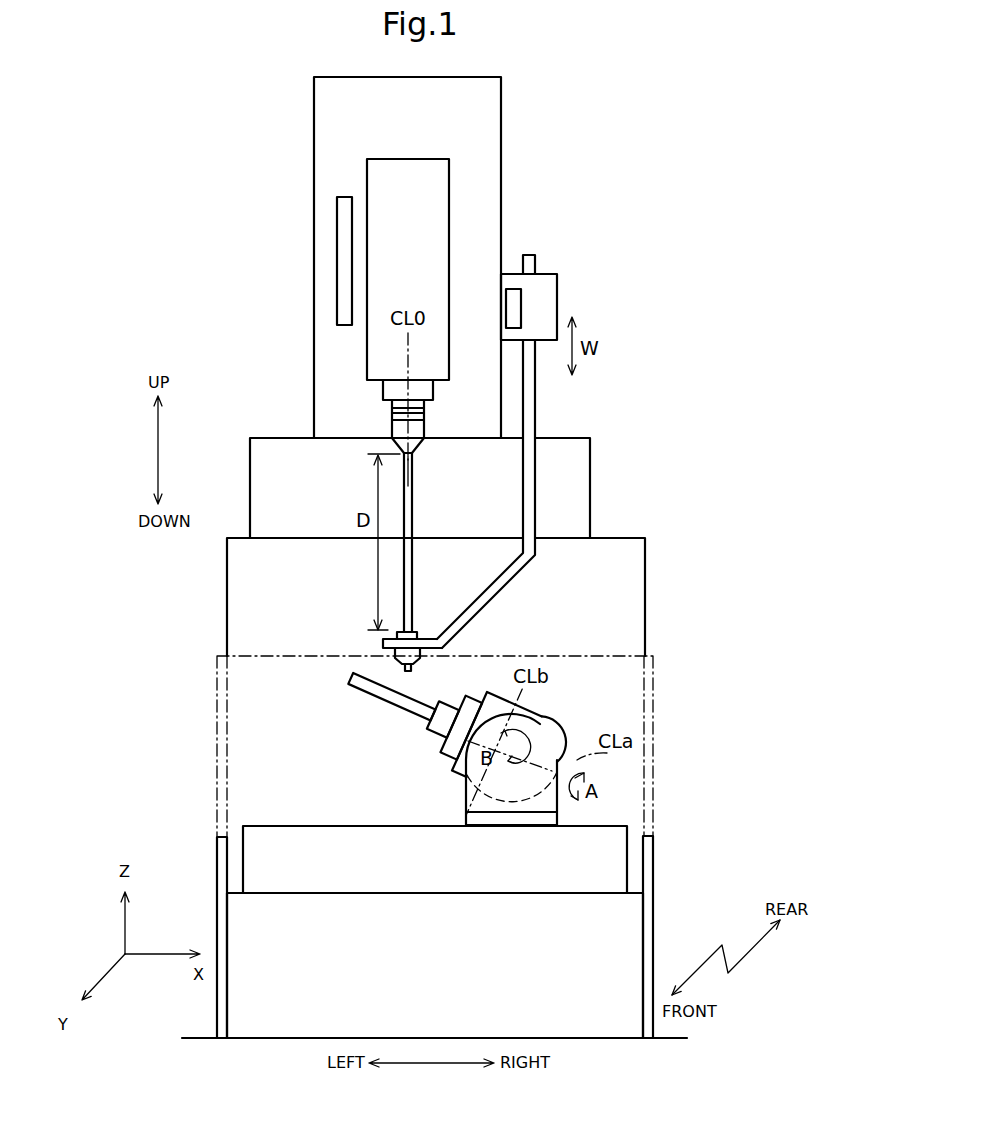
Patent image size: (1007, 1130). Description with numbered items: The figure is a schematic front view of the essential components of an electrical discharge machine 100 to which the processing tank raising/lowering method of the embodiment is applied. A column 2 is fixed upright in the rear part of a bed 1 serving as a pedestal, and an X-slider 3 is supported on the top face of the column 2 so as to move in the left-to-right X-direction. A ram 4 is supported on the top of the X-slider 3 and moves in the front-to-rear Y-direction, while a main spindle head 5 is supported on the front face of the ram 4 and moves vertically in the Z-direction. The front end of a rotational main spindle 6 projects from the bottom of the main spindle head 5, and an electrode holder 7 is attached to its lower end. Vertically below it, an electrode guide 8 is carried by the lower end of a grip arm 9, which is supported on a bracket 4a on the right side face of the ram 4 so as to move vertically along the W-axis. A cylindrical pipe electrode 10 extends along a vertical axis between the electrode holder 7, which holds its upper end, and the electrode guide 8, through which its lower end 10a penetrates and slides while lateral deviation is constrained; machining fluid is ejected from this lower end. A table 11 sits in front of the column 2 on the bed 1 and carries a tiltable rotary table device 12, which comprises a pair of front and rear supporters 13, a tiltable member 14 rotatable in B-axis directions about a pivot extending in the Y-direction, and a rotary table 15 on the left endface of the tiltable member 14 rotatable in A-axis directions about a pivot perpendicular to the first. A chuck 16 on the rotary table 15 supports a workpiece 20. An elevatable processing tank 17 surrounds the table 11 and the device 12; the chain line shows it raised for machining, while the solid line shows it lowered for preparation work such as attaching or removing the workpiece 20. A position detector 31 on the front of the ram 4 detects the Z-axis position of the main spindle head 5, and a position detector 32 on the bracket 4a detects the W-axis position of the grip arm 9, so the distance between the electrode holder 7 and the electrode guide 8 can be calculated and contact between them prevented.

The electrical discharge machine 100 is at (679, 153).
The bed 1 is at (605, 940).
The column 2 is at (645, 565).
The X-slider 3 is at (590, 462).
The ram 4 is at (501, 152).
The bracket 4a is at (557, 298).
The main spindle head 5 is at (367, 180).
The rotational main spindle 6 is at (383, 390).
The electrode holder 7 is at (392, 428).
The electrode guide 8 is at (397, 655).
The grip arm 9 is at (535, 405).
The electrode 10 is at (412, 508).
The tool tip 10a is at (411, 668).
The table 11 is at (605, 872).
The tiltable rotary table device 12 is at (619, 703).
The supporters 13 is at (465, 797).
The tiltable member 14 is at (546, 720).
The rotary table 15 is at (452, 760).
The chuck 16 is at (440, 750).
The processing tank 17 is at (217, 862).
The workpiece 20 is at (355, 688).
The position detector 31 is at (337, 283).
The position detector 32 is at (521, 290).